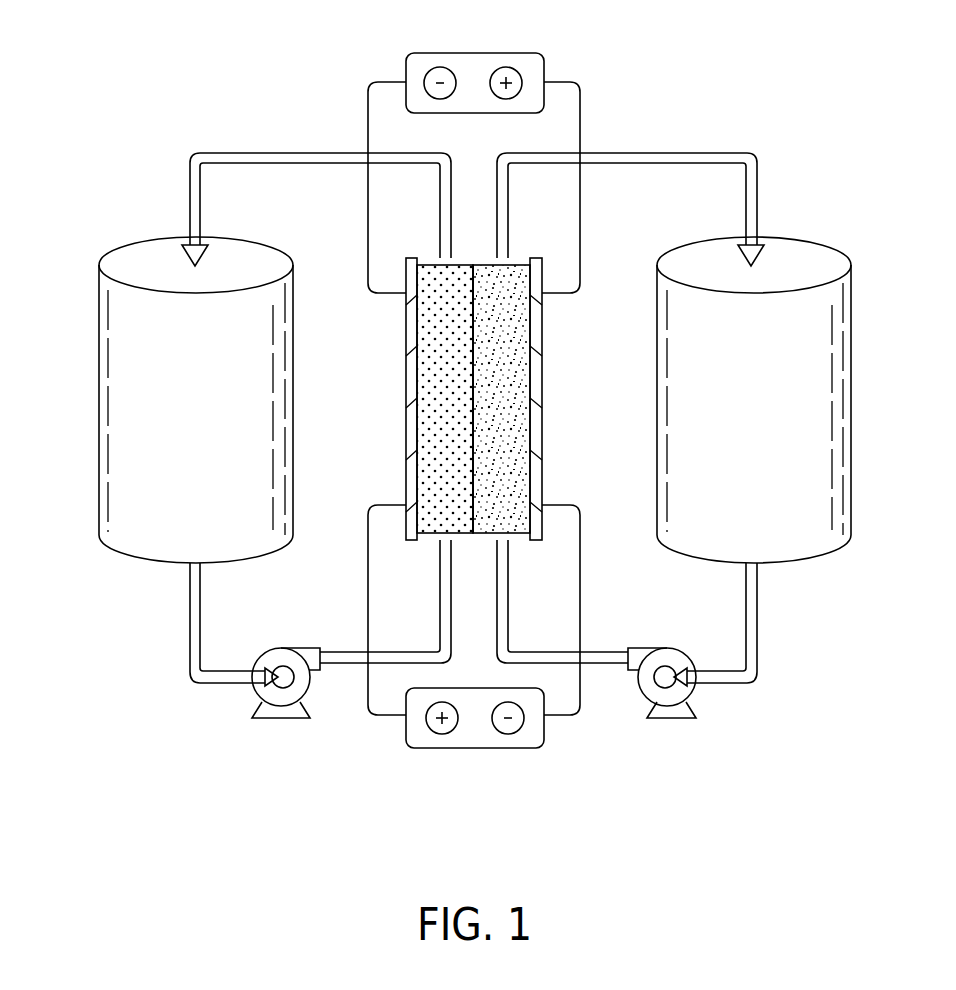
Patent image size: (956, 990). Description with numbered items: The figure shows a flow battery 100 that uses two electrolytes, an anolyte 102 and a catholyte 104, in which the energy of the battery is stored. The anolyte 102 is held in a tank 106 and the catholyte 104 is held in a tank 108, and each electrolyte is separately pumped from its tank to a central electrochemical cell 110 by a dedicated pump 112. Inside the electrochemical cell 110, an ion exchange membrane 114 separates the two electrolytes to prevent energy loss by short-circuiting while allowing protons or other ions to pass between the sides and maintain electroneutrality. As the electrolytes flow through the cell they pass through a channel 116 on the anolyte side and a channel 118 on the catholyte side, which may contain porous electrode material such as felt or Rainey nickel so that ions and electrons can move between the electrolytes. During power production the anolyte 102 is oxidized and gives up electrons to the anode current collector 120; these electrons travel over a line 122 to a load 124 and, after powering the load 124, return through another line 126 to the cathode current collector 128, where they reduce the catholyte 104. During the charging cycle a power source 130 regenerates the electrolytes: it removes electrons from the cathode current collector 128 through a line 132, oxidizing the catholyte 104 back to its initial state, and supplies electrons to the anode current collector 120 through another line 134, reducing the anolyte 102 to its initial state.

The flow battery 100 is at (473, 452).
The anolyte 102 is at (145, 405).
The catholyte 104 is at (805, 406).
The tank 106 is at (158, 562).
The tank 108 is at (780, 562).
The electrochemical cell 110 is at (459, 399).
The pump 112 is at (287, 720).
The ion exchange membrane 114 is at (476, 462).
The channel 116 is at (430, 363).
The channel 118 is at (525, 370).
The anode current collector 120 is at (410, 438).
The line 122 is at (366, 120).
The load 124 is at (445, 52).
The line 126 is at (582, 208).
The cathode current collector 128 is at (535, 437).
The power source 130 is at (406, 728).
The line 132 is at (583, 589).
The line 134 is at (368, 603).